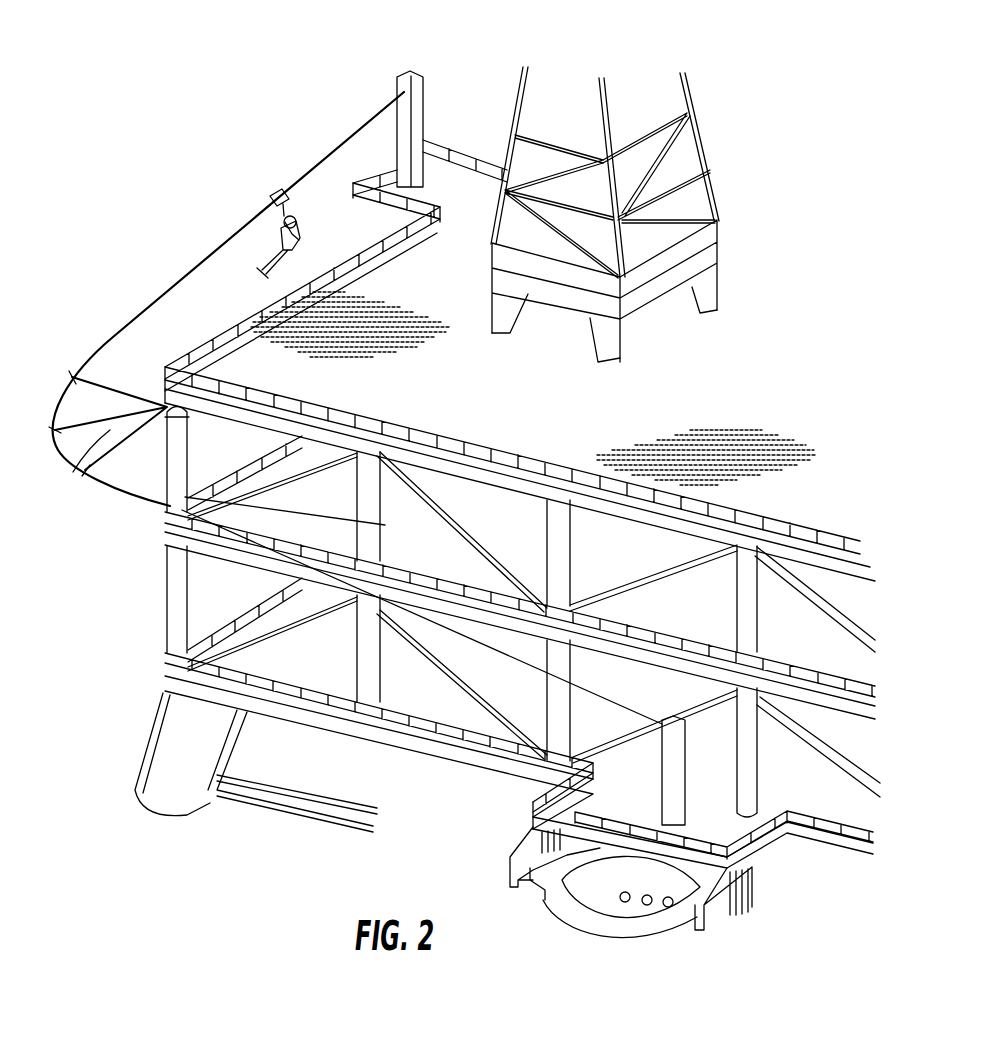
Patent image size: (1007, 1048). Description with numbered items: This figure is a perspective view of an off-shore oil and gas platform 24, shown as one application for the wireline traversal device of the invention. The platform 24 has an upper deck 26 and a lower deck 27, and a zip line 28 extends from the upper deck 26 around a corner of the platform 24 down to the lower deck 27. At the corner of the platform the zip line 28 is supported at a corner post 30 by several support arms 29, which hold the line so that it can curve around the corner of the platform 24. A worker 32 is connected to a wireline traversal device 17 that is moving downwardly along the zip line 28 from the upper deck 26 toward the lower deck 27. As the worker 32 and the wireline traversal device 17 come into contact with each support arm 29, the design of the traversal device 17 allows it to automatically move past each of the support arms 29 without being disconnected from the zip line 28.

The off-shore platform 24 is at (210, 181).
The wireline traversal device 17 is at (279, 192).
The zip line 28 is at (325, 157).
The worker 32 is at (303, 230).
The support arms 29 is at (165, 405).
The corner post 30 is at (182, 473).
The upper deck 26 is at (531, 389).
The lower deck 27 is at (823, 803).